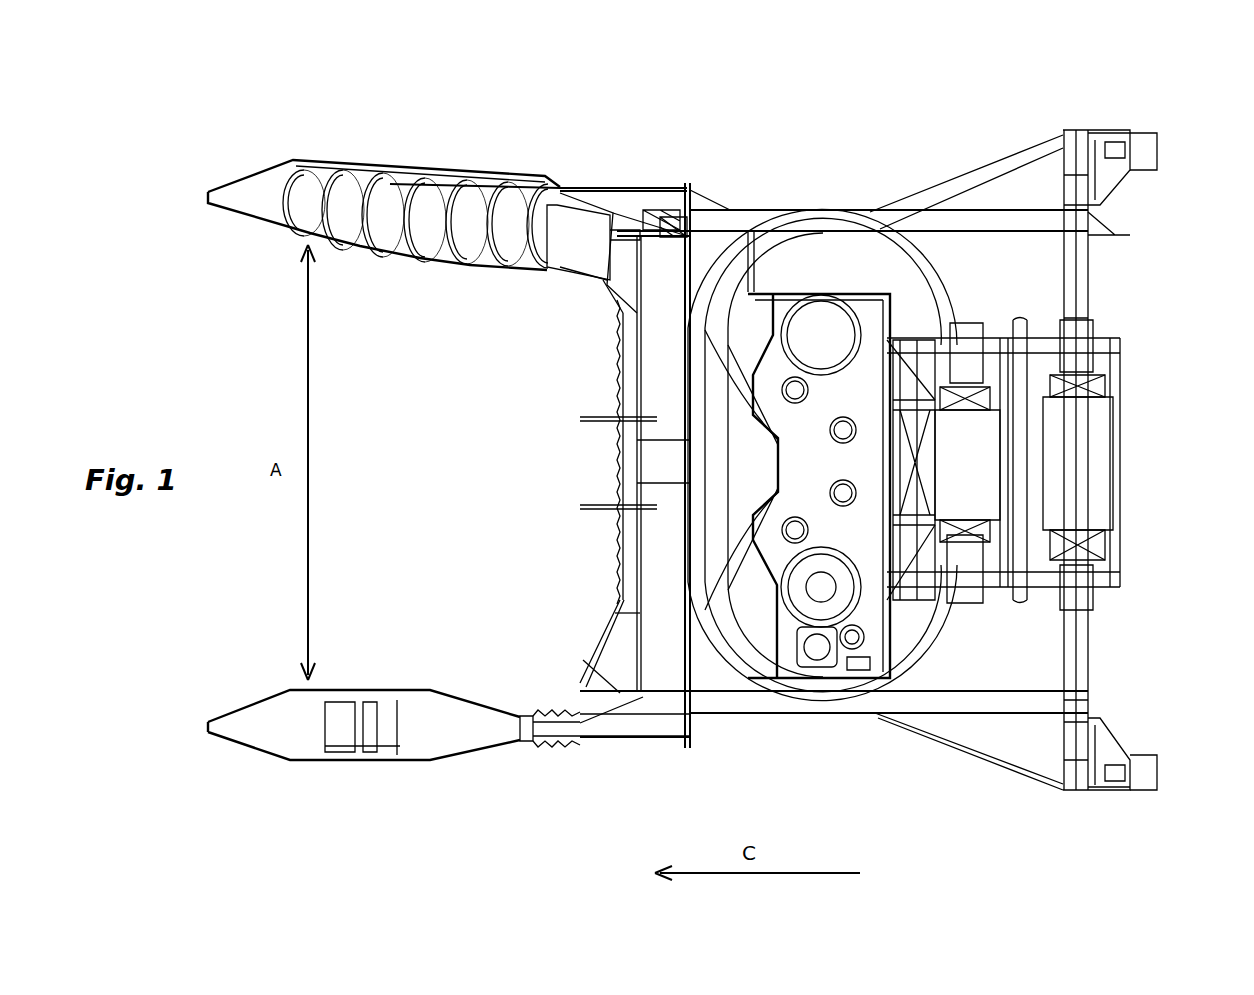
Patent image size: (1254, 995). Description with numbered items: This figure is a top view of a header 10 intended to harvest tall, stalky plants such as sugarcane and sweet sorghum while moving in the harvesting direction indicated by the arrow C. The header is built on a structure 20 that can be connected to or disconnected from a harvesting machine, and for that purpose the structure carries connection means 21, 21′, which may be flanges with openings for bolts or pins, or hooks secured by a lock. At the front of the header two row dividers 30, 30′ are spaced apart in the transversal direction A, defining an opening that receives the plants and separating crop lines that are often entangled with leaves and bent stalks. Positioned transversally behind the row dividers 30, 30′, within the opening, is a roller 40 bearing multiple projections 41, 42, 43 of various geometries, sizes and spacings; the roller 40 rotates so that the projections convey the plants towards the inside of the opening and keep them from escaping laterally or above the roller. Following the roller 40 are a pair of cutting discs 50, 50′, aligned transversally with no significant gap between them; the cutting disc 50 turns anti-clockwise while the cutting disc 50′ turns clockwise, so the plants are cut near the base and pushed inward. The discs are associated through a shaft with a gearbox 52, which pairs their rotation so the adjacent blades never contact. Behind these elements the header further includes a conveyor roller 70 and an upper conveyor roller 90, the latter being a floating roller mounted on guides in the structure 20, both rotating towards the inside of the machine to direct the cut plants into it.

The header 10 is at (1030, 53).
The structure 20 is at (1082, 268).
The connection means 21 is at (1158, 160).
The connection means 21′ is at (1152, 768).
The row divider 30 is at (418, 131).
The row divider 30′ is at (383, 795).
The roller 40 is at (655, 596).
The projection 41 is at (600, 420).
The projection 42 is at (603, 508).
The projection 43 is at (617, 374).
The cutting disc 50 is at (832, 200).
The cutting disc 50′ is at (792, 720).
The gearbox 52 is at (868, 655).
The conveyor roller 70 is at (968, 432).
The upper conveyor roller 90 is at (1085, 505).